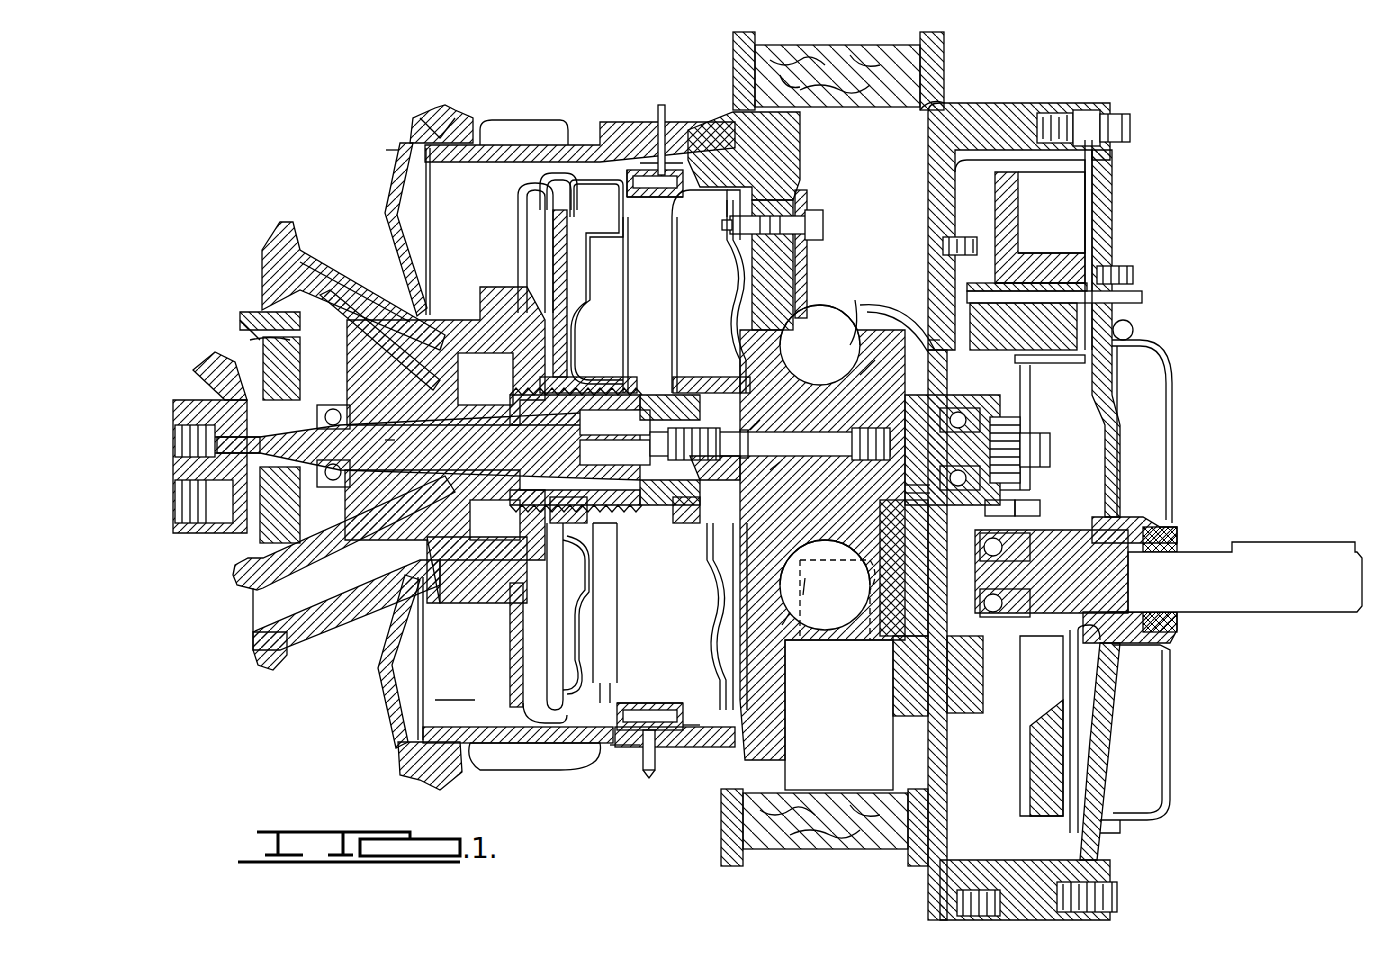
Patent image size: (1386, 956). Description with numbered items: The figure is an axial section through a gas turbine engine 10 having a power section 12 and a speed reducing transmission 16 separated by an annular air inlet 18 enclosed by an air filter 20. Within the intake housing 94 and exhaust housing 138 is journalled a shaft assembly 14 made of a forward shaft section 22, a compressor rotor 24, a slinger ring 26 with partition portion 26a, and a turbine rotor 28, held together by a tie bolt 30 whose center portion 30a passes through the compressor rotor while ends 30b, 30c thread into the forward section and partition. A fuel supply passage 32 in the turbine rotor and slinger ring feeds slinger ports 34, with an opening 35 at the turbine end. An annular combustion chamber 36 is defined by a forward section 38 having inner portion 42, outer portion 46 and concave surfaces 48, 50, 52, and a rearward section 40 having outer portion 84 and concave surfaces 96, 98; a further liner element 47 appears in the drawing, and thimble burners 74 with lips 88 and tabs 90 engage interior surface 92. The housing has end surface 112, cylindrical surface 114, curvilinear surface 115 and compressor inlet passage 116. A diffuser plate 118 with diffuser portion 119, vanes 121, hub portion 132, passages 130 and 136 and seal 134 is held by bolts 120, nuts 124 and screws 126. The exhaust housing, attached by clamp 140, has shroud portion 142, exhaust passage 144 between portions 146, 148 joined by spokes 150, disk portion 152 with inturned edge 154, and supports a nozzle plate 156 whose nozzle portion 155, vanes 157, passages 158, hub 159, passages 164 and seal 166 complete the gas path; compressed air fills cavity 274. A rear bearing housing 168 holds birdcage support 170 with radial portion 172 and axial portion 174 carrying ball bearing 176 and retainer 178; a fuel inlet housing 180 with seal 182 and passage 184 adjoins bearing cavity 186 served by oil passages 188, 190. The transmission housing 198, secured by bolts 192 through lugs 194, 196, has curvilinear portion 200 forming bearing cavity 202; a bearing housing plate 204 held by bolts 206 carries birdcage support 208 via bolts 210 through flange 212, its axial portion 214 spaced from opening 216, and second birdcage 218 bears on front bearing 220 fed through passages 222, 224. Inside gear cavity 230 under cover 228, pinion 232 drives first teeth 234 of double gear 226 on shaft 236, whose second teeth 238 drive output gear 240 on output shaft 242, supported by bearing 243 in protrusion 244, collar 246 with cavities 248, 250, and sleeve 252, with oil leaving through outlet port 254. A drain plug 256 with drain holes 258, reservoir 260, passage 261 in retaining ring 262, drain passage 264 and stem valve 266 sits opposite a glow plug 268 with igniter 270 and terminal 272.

The gas turbine engine 10 is at (393, 152).
The power section 12 is at (513, 114).
The shaft assembly 14 is at (827, 385).
The speed reducing transmission 16 is at (1129, 186).
The air inlet 18 is at (840, 768).
The air filter 20 is at (790, 830).
The forward or power take off shaft section 22 is at (935, 435).
The radial outflow compressor rotor 24 is at (770, 412).
The slinger ring or central shaft member 26 is at (671, 450).
The partition portion 26a is at (540, 523).
The radial inflow turbine rotor 28 is at (583, 420).
The tie bolt 30 is at (660, 440).
The center portion 30a is at (810, 362).
The end 30b is at (780, 560).
The end 30c is at (822, 317).
The fuel supply passage 32 is at (428, 445).
The slinger ports 34 is at (650, 385).
The opening 35 is at (403, 439).
The combustion chamber or combustor 36 is at (620, 625).
The forward section 38 is at (808, 258).
The rearward section 40 is at (560, 279).
The radially inner portion 42 is at (712, 370).
The radially outer portion 46 is at (553, 168).
The spring 47 is at (690, 356).
The annular concave surface 48 is at (725, 325).
The annular concave surface 50 is at (714, 274).
The annular concave surface 52 is at (735, 250).
The thimble burner 74 is at (605, 182).
The radially outer portion 84 is at (628, 200).
The annular lip 88 is at (655, 151).
The tab 90 is at (655, 151).
The interior surface 92 is at (462, 138).
The intake housing 94 is at (515, 745).
The annular concave surface 96 is at (590, 330).
The annular concave surface 98 is at (625, 262).
The annular end surface 112 is at (790, 680).
The cylindrical surface 114 is at (790, 300).
The curvilinear annular surface 115 is at (805, 573).
The compressor inlet passage 116 is at (863, 379).
The compressor diffuser plate 118 is at (775, 700).
The diffuser portion 119 is at (815, 235).
The bolts 120 is at (775, 213).
The diffuser vanes 121 is at (810, 270).
The nuts 124 is at (805, 208).
The screws 126 is at (730, 570).
The passages 130 is at (800, 603).
The hub portion 132 is at (705, 555).
The labyrinthian seal 134 is at (702, 471).
The passages 136 is at (765, 478).
The exhaust housing 138 is at (268, 234).
The U-shaped clamp 140 is at (425, 121).
The axially inwardly projecting portion 142 is at (445, 428).
The exhaust passage 144 is at (345, 300).
The inner conical housing portion 146 is at (477, 570).
The outer conical housing portion 148 is at (348, 600).
The spreaders or spokes 150 is at (295, 310).
The disk shaped portion 152 is at (518, 205).
The inturned edge portion 154 is at (553, 180).
The nozzle portion 155 is at (512, 241).
The nozzle plate 156 is at (545, 640).
The nozzle vanes 157 is at (590, 650).
The turbine inlet passages 158 is at (510, 618).
The hub portion 159 is at (560, 486).
The passages 164 is at (611, 449).
The labyrinthian seal 166 is at (611, 424).
The rear bearing housing 168 is at (242, 339).
The birdcage bearing support 170 is at (250, 343).
The radial portion 172 is at (260, 352).
The axial portion 174 is at (380, 380).
The ball bearing 176 is at (340, 480).
The bearing retainer 178 is at (395, 372).
The fuel inlet housing 180 is at (172, 408).
The fuel seal 182 is at (265, 455).
The fuel inlet passage 184 is at (175, 445).
The bearing cavity 186 is at (345, 540).
The passage 188 is at (210, 377).
The passage 190 is at (178, 503).
The bolts 192 is at (893, 660).
The lugs 194 is at (885, 700).
The lugs 196 is at (900, 595).
The transmission housing 198 is at (980, 115).
The curvilinear portion 200 is at (870, 325).
The forward bearing cavity 202 is at (898, 570).
The front bearing housing plate 204 is at (935, 310).
The bolts 206 is at (962, 236).
The flanged birdcage support 208 is at (1035, 400).
The bolts 210 is at (1005, 505).
The flange 212 is at (1060, 362).
The axially extending portion 214 is at (898, 620).
The opening 216 is at (925, 360).
The second birdcage 218 is at (925, 495).
The front ball bearing 220 is at (905, 487).
The passage 222 is at (1148, 300).
The passage 224 is at (1000, 325).
The double gear 226 is at (1040, 266).
The gear box cover 228 is at (1100, 235).
The gear cavity 230 is at (1020, 170).
The pinion 232 is at (1050, 450).
The first set of teeth 234 is at (1005, 175).
The shaft 236 is at (1135, 278).
The second set of teeth 238 is at (1052, 250).
The output gear 240 is at (1105, 423).
The output shaft 242 is at (1258, 592).
The ball bearing 243 is at (1040, 575).
The cup-shaped protrusion 244 is at (1005, 650).
The bearing collar 246 is at (998, 505).
The L-shaped cavity 248 is at (1028, 505).
The L-shaped cavity 250 is at (1110, 640).
The sleeve 252 is at (1160, 545).
The outlet port 254 is at (960, 913).
The drain plug 256 is at (655, 800).
The drain holes 258 is at (647, 708).
The reservoir 260 is at (580, 760).
The fuel drain passage 261 is at (700, 728).
The retaining ring 262 is at (650, 705).
The drain passage 264 is at (640, 765).
The stem valve 266 is at (660, 775).
The glow plug 268 is at (717, 100).
The igniter 270 is at (672, 198).
The terminal 272 is at (672, 106).
The annular cavity 274 is at (455, 687).